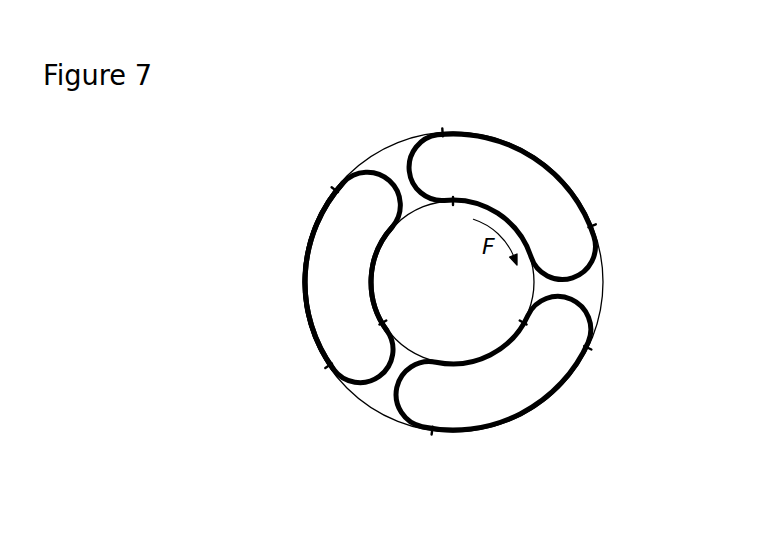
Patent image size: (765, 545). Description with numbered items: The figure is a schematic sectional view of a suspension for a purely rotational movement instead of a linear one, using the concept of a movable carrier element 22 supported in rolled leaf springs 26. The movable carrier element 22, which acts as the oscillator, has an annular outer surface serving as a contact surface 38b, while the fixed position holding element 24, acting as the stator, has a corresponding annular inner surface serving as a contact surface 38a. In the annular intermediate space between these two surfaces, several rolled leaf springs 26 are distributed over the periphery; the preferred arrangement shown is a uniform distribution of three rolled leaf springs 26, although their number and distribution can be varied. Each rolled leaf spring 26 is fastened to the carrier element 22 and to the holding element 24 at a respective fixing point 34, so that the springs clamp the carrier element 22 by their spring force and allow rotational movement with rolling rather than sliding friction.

The movable carrier element 22 is at (532, 289).
The fixed position holding element 24 is at (390, 146).
The rolled leaf spring 26 is at (321, 277).
The fixing point 34 is at (337, 190).
The contact surface 38a is at (306, 291).
The contact surface 38b is at (370, 272).